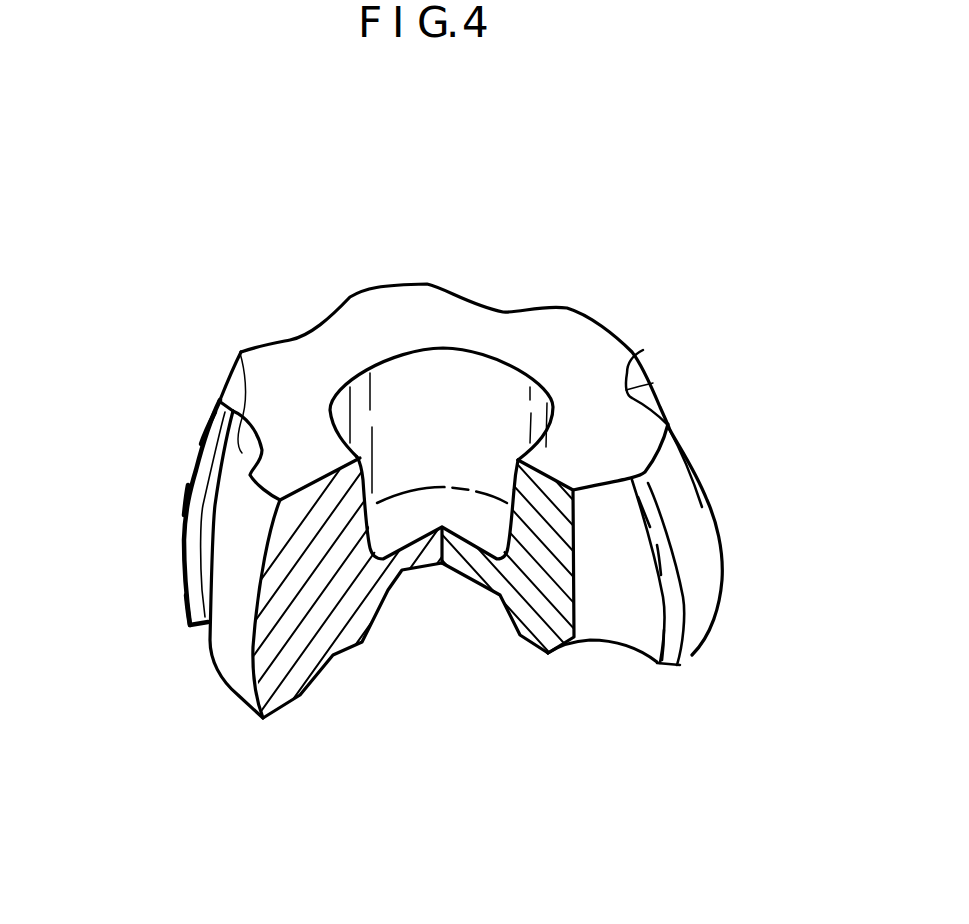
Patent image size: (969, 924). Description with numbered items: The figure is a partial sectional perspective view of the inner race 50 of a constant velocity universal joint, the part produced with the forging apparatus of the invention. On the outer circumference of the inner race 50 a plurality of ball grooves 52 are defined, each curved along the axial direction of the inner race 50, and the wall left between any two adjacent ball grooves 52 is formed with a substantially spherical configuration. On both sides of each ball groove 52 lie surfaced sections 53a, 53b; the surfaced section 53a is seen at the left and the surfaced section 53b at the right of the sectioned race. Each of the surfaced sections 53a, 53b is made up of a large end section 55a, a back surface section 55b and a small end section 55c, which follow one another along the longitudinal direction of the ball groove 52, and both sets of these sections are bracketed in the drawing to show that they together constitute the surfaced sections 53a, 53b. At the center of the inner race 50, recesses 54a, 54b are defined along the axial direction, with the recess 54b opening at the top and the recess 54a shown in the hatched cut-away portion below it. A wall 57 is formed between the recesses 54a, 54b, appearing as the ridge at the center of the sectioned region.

The inner race of the constant velocity universal joint 50 is at (611, 254).
The ball grooves 52 is at (470, 303).
The surfaced section 53a is at (100, 432).
The surfaced section 53b is at (640, 373).
The recess 54a is at (378, 600).
The recess 54b is at (413, 372).
The large end section 55a is at (193, 610).
The back surface section 55b is at (195, 496).
The small end section 55c is at (213, 425).
The wall 57 is at (462, 560).